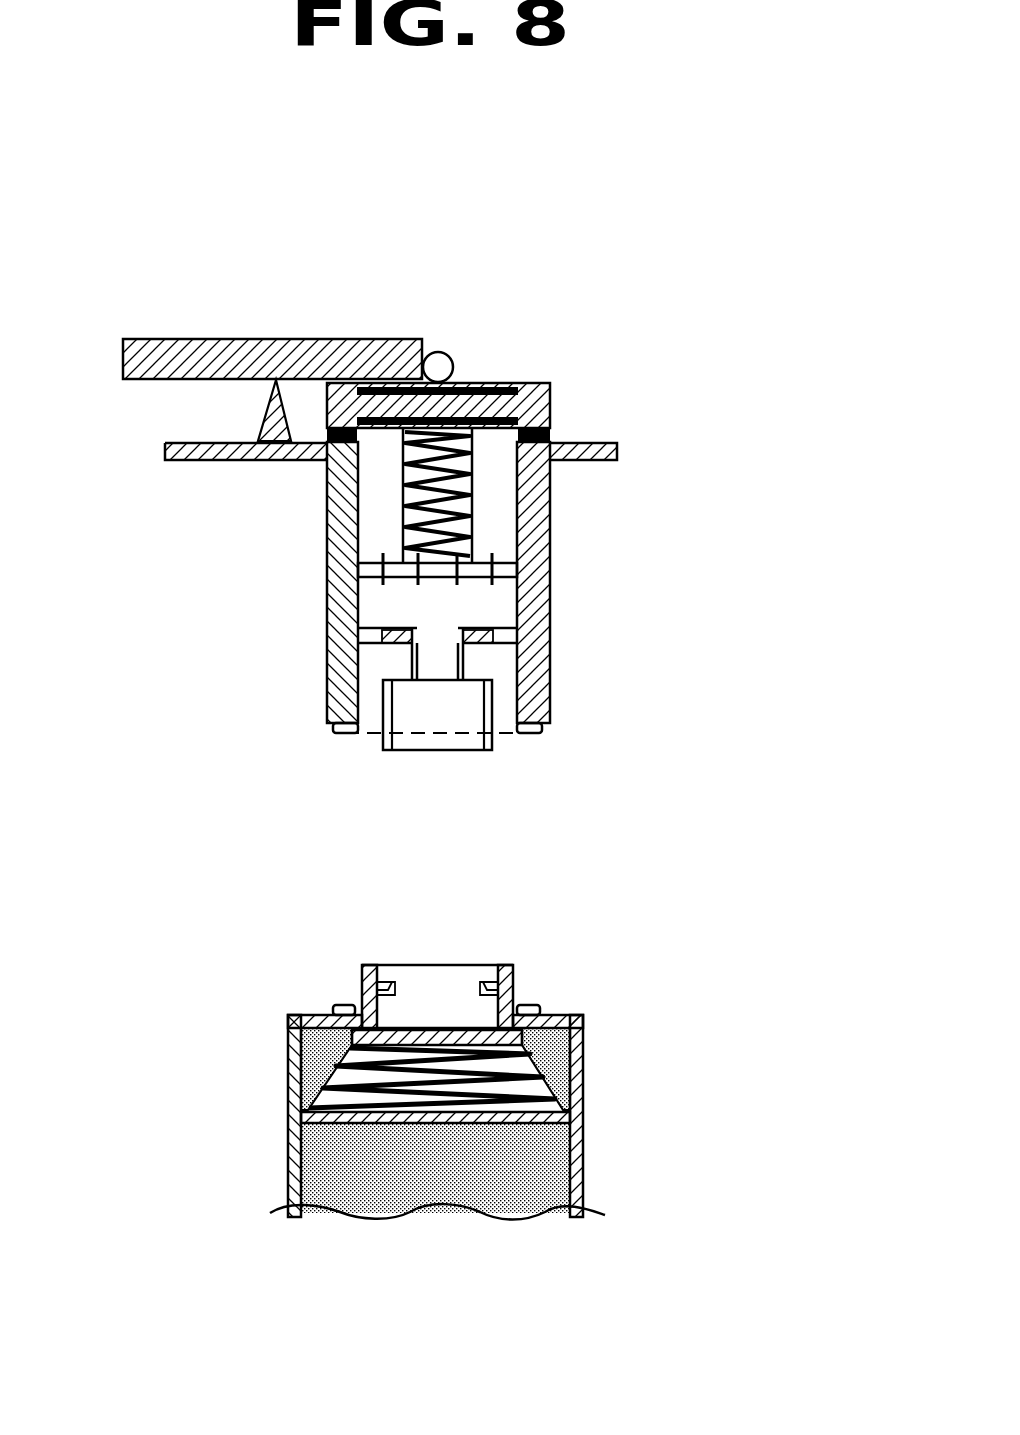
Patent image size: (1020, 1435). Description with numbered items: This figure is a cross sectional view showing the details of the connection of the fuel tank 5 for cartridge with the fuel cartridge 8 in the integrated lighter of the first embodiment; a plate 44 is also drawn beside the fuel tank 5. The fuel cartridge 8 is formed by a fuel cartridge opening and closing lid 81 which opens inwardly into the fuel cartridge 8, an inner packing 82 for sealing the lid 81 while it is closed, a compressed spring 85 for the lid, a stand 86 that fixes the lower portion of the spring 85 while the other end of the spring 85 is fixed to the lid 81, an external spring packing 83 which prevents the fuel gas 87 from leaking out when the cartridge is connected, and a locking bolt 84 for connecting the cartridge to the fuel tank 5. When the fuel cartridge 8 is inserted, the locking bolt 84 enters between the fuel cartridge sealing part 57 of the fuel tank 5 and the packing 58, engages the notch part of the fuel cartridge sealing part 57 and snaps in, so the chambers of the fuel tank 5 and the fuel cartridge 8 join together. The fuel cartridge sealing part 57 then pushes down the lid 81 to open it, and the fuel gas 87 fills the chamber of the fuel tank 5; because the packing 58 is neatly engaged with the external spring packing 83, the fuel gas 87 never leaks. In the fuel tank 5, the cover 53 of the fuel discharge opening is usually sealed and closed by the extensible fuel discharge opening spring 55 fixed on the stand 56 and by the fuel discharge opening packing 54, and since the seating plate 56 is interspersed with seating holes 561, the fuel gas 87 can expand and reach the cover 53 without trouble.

The fuel tank 5 is at (275, 607).
The ink cartridge wall plate 44 is at (192, 338).
The cover of the fuel discharge opening 53 is at (522, 368).
The fuel discharge opening packing 54 is at (550, 435).
The fuel discharge opening spring 55 is at (403, 490).
The stand 56 is at (517, 532).
The seating holes 561 is at (492, 576).
The fuel cartridge sealing part 57 is at (382, 747).
The packing 58 is at (537, 735).
The fuel cartridge 8 is at (620, 1133).
The fuel cartridge opening and closing lid 81 is at (362, 1035).
The inner packing 82 is at (550, 1013).
The external spring packing 83 is at (527, 1004).
The locking bolt 84 is at (383, 977).
The compressed spring 85 is at (327, 1085).
The stand for the spring 86 is at (323, 1122).
The fuel gas 87 is at (377, 1180).